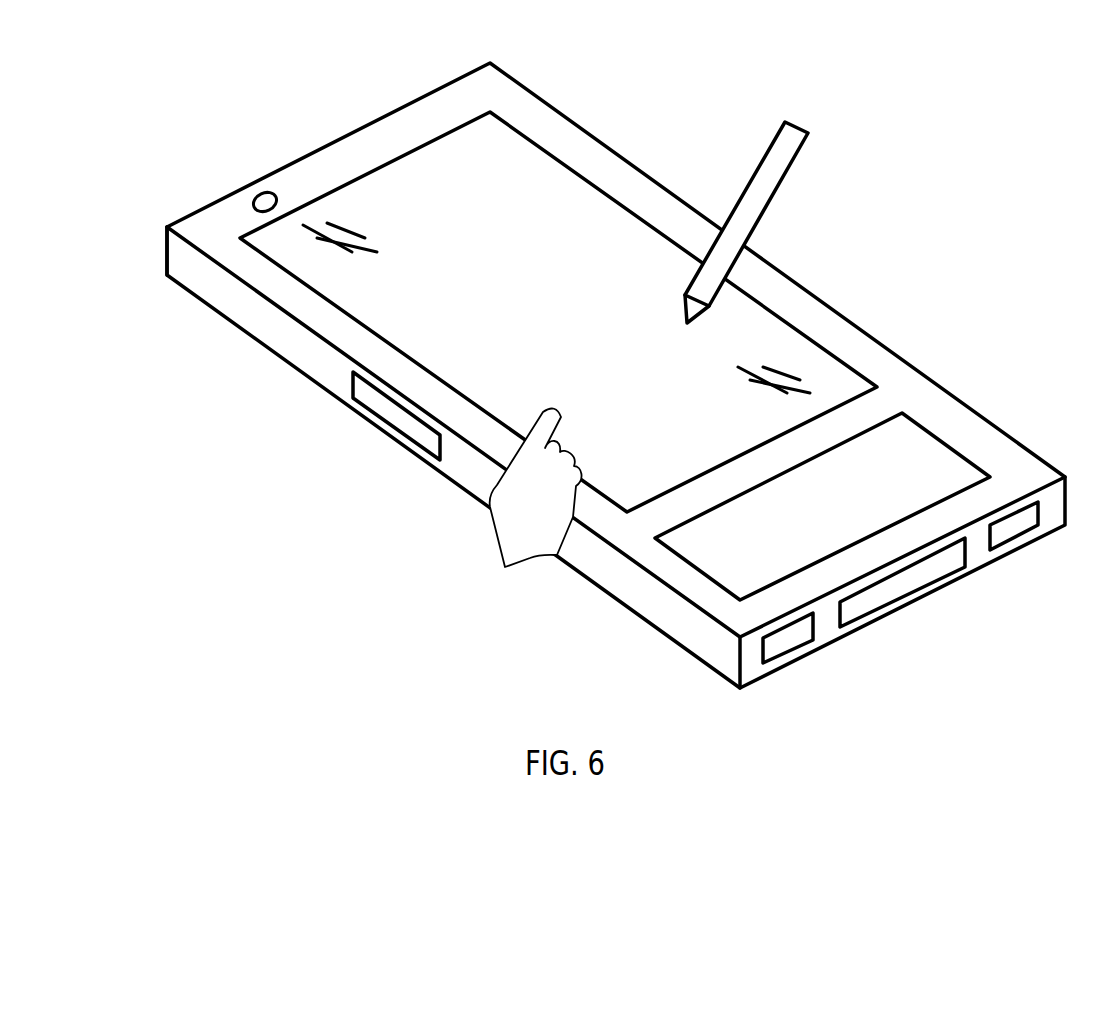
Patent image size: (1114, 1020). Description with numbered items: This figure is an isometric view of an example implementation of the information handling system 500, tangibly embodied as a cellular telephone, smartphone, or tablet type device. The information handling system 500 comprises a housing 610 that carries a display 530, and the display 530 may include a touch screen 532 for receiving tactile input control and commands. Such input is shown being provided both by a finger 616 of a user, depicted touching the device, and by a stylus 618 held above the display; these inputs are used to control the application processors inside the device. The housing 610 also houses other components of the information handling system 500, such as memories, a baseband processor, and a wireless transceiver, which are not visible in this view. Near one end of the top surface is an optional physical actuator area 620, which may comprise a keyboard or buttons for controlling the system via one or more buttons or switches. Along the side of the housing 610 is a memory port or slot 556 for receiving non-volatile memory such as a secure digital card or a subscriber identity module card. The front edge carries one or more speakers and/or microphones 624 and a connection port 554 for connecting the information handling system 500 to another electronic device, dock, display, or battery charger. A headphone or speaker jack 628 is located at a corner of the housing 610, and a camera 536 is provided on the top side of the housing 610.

The information handling system 500 is at (629, 98).
The housing 610 is at (427, 90).
The headphone or speaker jack 628 is at (192, 210).
The display 530 is at (493, 177).
The touch screen 532 is at (590, 314).
The camera 536 is at (258, 192).
The physical actuator area 620 is at (913, 462).
The memory port or slot 556 is at (372, 412).
The connection port 554 is at (918, 587).
The speakers and/or microphones 624 is at (793, 650).
The stylus 618 is at (765, 155).
The finger 616 is at (552, 410).